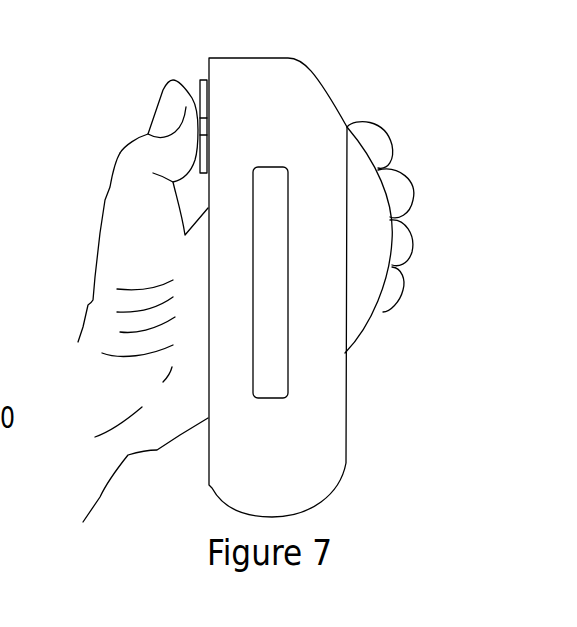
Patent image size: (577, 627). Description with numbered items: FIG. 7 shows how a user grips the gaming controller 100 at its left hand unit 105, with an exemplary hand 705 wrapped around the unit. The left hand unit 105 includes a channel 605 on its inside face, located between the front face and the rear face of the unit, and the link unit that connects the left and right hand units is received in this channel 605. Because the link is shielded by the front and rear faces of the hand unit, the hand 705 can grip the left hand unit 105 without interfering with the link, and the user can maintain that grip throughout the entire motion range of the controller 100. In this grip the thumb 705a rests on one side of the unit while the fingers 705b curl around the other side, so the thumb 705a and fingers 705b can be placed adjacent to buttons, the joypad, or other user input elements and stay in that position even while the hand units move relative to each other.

The controller 100 is at (294, 273).
The left hand unit 105 is at (325, 410).
The channel 605 is at (258, 272).
The hand 705 is at (256, 298).
The thumb 705a is at (155, 115).
The fingers 705b is at (385, 137).